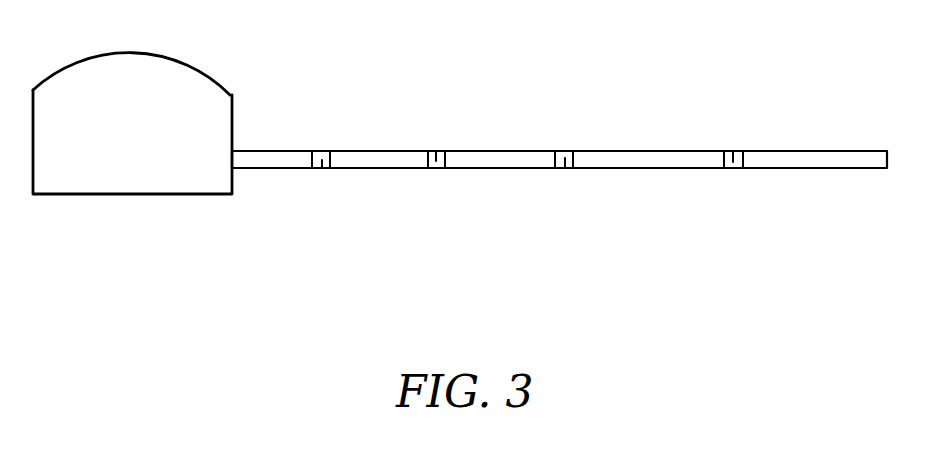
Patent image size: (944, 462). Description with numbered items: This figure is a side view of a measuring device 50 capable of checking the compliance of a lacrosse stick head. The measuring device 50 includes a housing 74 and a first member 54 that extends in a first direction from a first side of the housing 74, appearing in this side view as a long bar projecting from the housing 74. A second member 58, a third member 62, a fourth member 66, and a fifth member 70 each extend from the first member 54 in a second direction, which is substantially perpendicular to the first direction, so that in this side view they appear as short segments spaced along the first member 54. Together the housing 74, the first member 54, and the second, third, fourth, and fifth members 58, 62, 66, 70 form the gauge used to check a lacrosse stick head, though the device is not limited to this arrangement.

The measuring device 50 is at (143, 257).
The first member 54 is at (803, 160).
The second member 58 is at (322, 168).
The third member 62 is at (434, 153).
The fourth member 66 is at (565, 168).
The fifth member 70 is at (731, 153).
The housing 74 is at (125, 78).